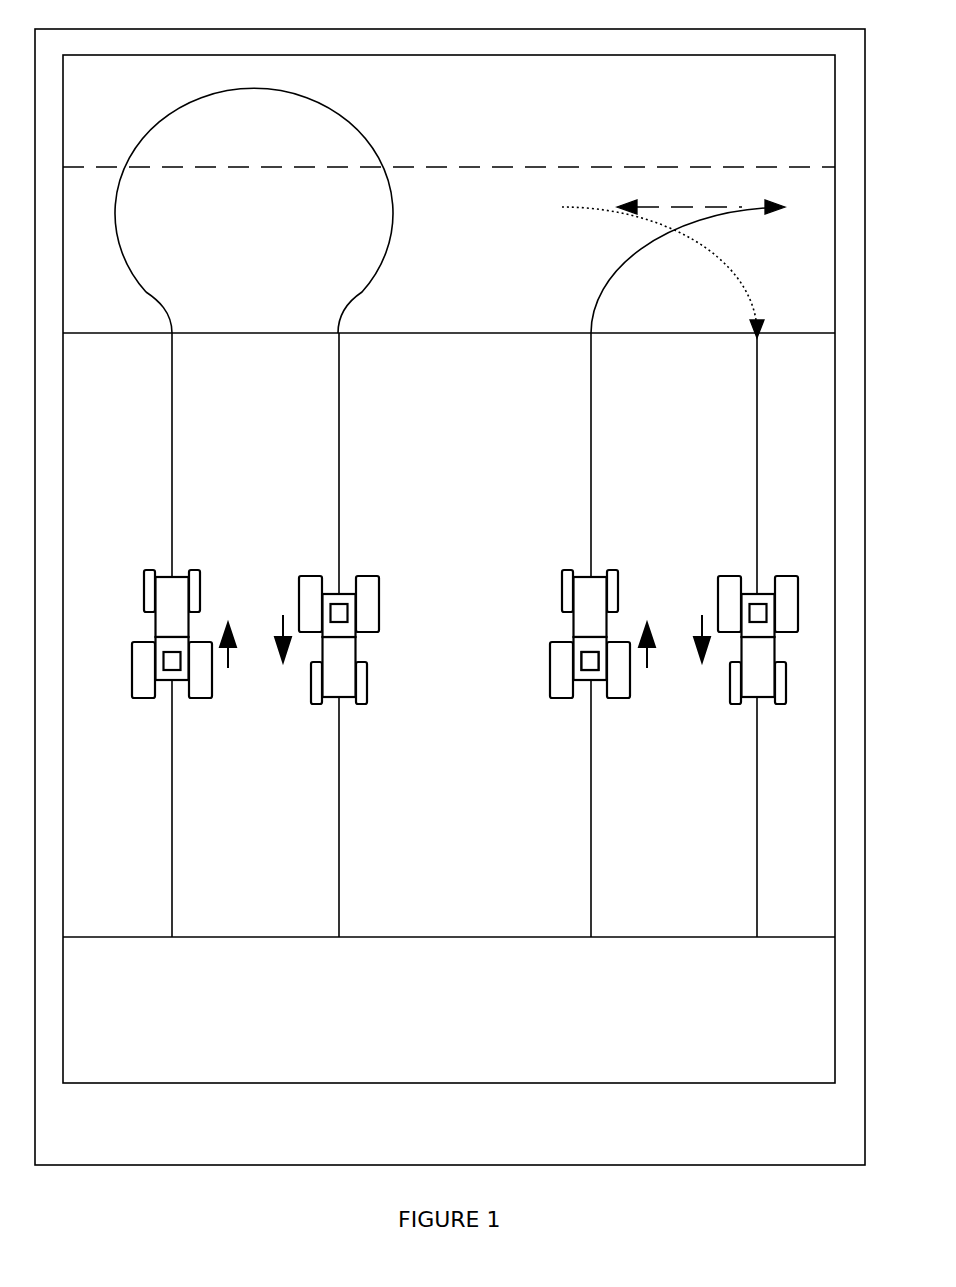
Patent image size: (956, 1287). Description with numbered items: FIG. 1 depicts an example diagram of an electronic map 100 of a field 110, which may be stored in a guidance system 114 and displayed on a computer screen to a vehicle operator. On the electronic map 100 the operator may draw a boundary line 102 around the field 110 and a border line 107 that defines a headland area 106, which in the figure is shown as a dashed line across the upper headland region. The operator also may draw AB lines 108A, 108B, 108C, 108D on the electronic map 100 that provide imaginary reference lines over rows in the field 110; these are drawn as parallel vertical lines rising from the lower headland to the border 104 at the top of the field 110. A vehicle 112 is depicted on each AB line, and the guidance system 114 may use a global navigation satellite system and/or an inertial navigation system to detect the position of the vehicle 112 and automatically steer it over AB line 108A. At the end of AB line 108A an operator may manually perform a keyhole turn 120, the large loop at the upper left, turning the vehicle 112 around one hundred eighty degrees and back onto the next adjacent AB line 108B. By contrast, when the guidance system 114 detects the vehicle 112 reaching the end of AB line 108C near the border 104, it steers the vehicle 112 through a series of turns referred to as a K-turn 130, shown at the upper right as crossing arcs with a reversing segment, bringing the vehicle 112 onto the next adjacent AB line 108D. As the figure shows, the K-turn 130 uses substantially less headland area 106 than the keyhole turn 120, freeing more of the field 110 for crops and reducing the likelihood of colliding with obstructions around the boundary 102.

The electronic map 100 is at (119, 21).
The boundary line 102 is at (285, 1083).
The border 104 is at (398, 334).
The headland area 106 is at (550, 1044).
The border line 107 is at (440, 167).
The AB line 108A is at (172, 495).
The AB line 108B is at (339, 438).
The AB line 108C is at (591, 523).
The AB line 108D is at (757, 468).
The field 110 is at (503, 476).
The vehicle 112 is at (153, 633).
The guidance system 114 is at (588, 672).
The keyhole turn 120 is at (255, 243).
The K-turn 130 is at (647, 170).